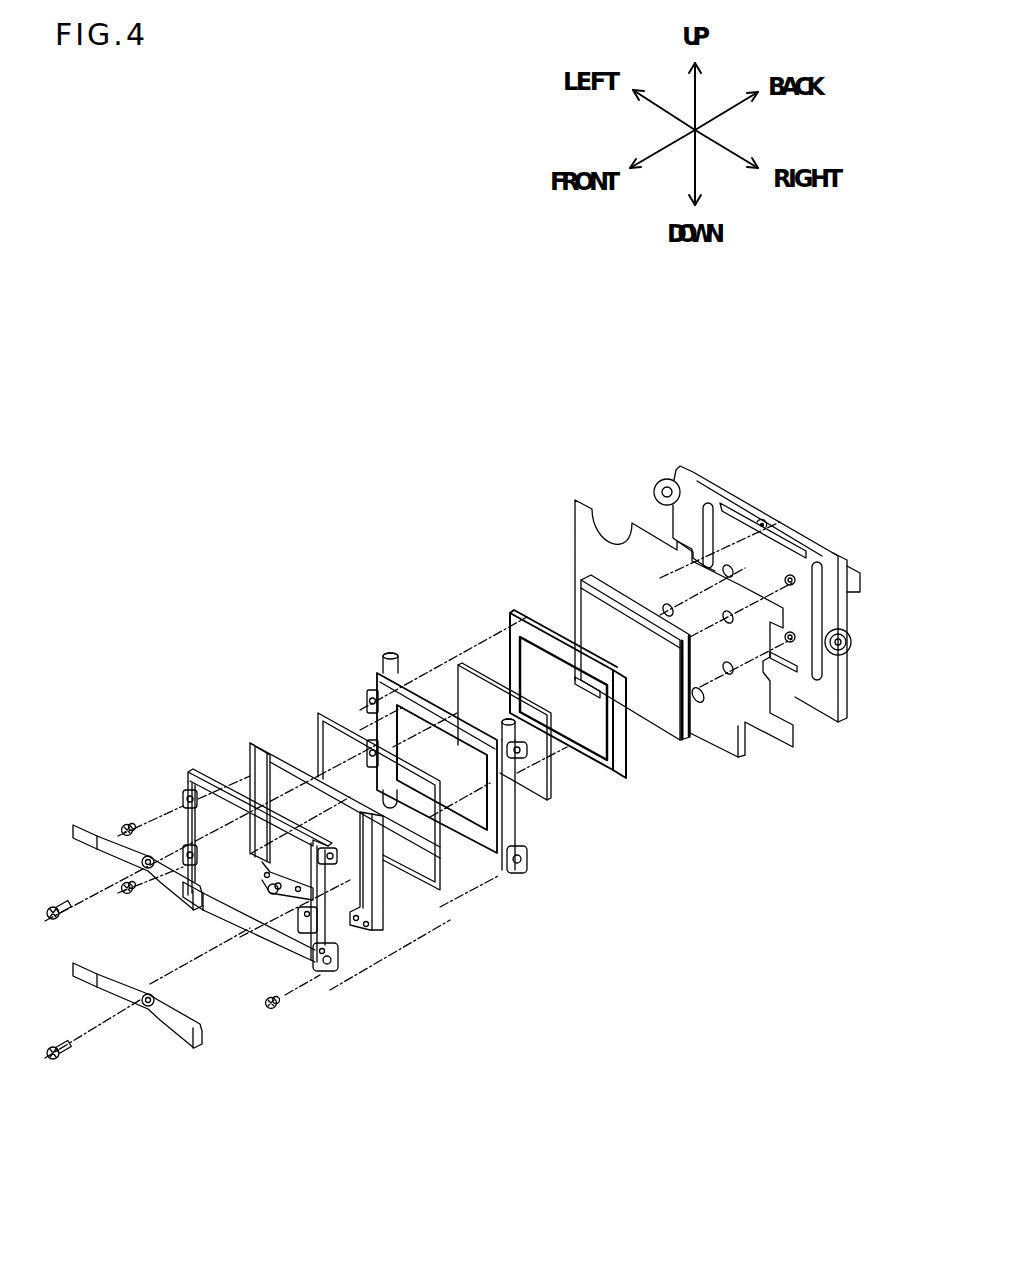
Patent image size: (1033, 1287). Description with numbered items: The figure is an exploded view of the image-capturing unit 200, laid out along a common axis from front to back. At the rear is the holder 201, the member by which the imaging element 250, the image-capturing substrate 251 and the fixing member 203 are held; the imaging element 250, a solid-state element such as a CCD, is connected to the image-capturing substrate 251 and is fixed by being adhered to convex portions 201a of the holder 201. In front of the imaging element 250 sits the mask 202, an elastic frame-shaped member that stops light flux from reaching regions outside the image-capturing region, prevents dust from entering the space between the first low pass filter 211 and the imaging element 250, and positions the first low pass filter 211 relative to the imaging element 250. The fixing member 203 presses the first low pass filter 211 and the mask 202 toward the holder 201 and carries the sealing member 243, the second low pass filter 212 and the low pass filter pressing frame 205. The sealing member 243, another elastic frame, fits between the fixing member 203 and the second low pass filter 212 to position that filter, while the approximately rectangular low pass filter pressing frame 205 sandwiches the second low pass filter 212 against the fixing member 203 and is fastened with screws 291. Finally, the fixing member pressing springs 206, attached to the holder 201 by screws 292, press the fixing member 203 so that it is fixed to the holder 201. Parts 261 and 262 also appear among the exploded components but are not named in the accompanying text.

The image-capturing unit 200 is at (471, 408).
The holder 201 is at (697, 487).
The convex portions of the holder 201a is at (789, 574).
The mask 202 is at (524, 618).
The fixing member 203 is at (493, 857).
The low pass filter pressing frame 205 is at (317, 958).
The fixing member pressing springs 206 is at (82, 828).
The first low pass filter 211 is at (550, 788).
The second low pass filter 212 is at (282, 768).
The sealing member 243 is at (323, 712).
The imaging element 250 is at (667, 728).
The image-capturing substrate 251 is at (777, 737).
The frame 261 is at (252, 762).
The plate 262 is at (384, 897).
The screws 291 is at (127, 825).
The screws 292 is at (52, 920).